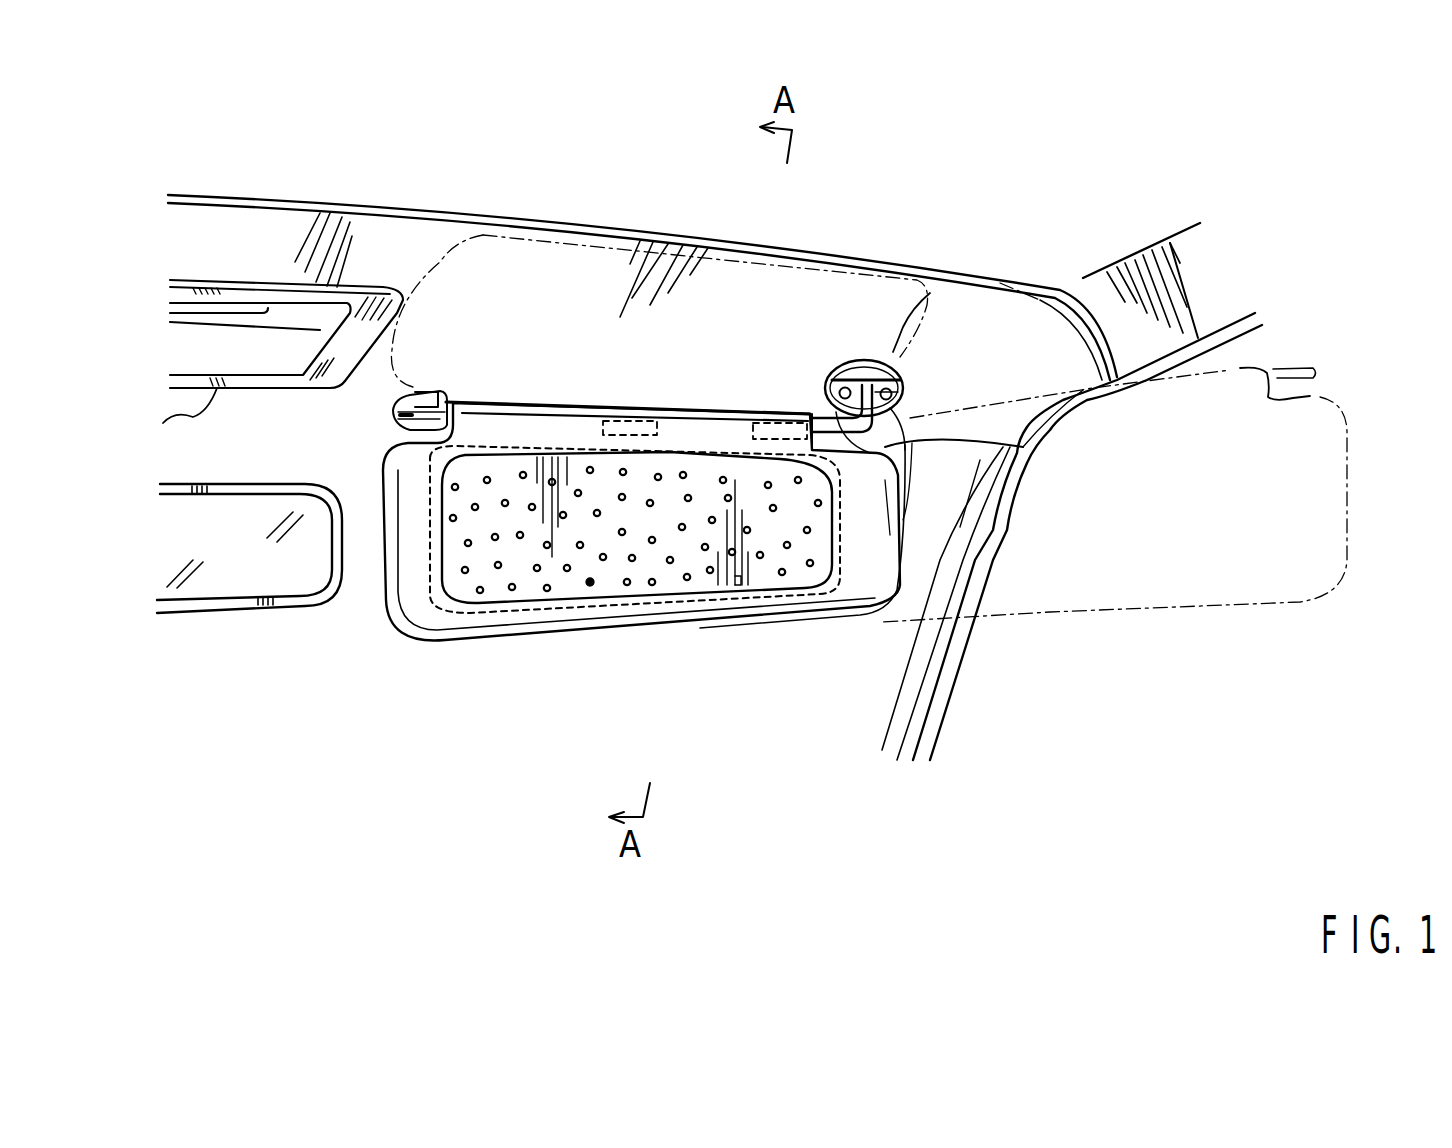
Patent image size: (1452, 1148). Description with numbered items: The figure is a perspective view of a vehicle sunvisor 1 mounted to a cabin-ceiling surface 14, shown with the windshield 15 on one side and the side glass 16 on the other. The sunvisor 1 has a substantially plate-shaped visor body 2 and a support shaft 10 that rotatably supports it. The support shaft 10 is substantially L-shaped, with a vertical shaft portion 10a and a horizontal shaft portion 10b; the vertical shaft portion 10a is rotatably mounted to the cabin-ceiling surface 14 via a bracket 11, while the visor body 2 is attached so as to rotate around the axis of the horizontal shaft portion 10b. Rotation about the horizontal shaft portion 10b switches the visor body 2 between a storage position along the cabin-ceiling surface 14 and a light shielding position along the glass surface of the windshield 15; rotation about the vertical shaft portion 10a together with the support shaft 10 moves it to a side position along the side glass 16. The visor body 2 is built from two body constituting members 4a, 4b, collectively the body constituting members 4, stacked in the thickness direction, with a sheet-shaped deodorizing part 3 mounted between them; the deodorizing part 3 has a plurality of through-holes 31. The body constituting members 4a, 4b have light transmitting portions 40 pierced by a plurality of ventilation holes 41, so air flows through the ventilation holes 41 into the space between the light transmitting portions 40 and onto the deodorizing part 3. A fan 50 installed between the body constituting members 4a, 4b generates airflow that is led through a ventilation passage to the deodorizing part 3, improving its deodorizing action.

The vehicle sunvisor 1 is at (677, 464).
The visor body 2 is at (647, 600).
The deodorizing part 3 is at (567, 590).
The body constituting members 4 is at (647, 572).
The body constituting member 4a is at (435, 625).
The body constituting member 4b is at (487, 640).
The support shaft 10 is at (889, 286).
The vertical shaft portion 10a is at (870, 400).
The horizontal shaft portion 10b is at (830, 428).
The bracket 11 is at (930, 293).
The cabin-ceiling surface 14 is at (637, 212).
The windshield 15 is at (297, 723).
The side glass 16 is at (1102, 682).
The through-holes 31 is at (635, 595).
The light transmitting portions 40 is at (460, 557).
The ventilation holes 41 is at (591, 584).
The fan 50 is at (630, 425).